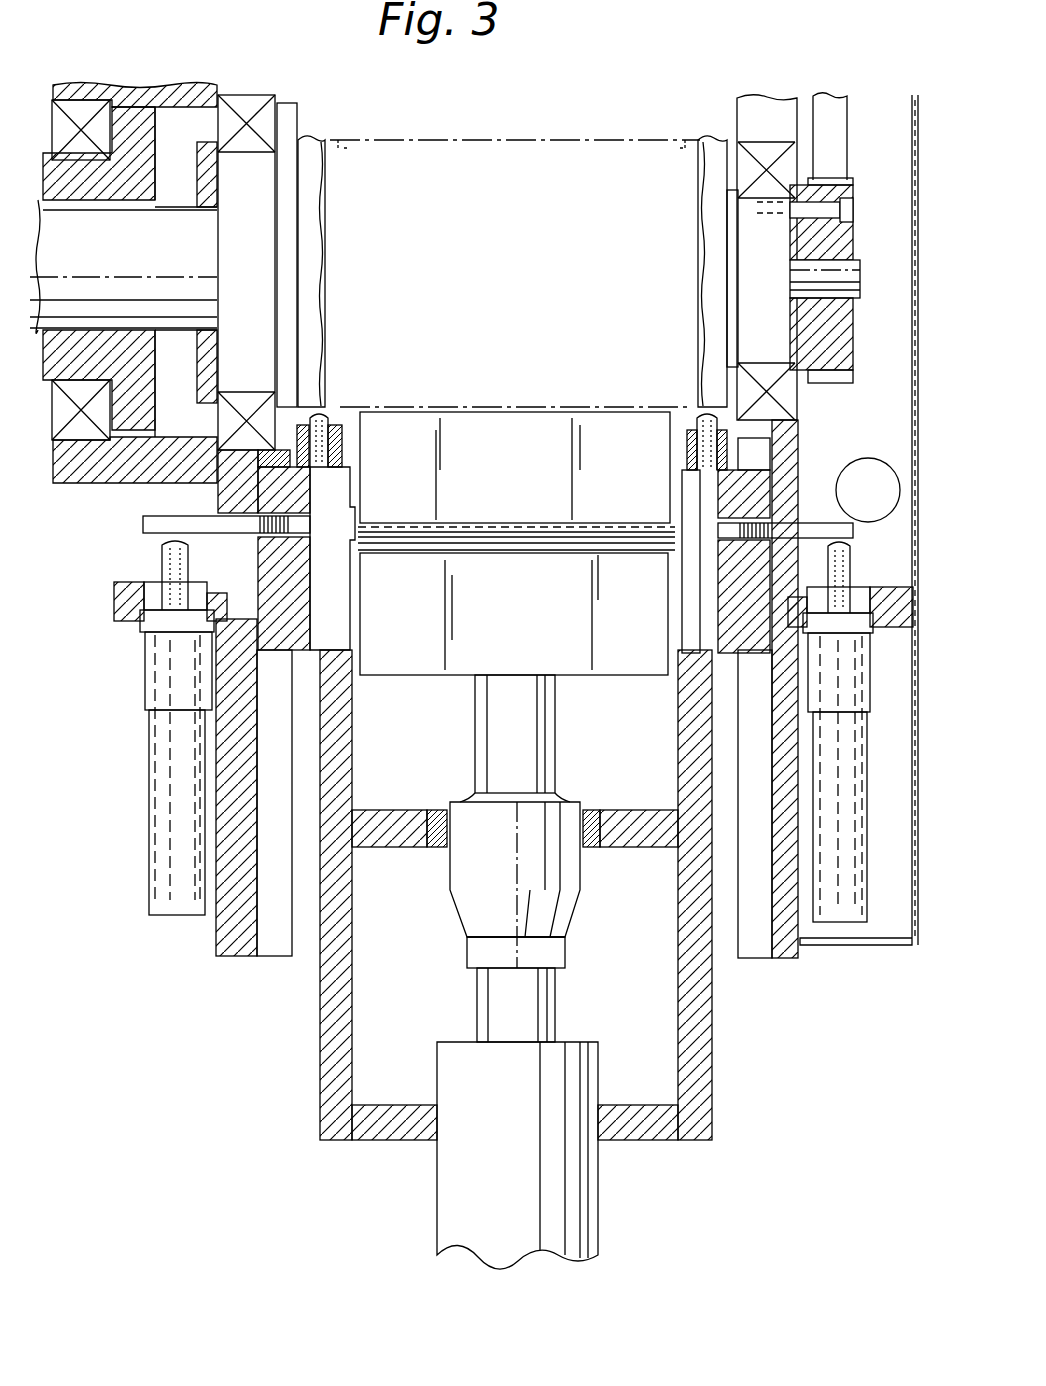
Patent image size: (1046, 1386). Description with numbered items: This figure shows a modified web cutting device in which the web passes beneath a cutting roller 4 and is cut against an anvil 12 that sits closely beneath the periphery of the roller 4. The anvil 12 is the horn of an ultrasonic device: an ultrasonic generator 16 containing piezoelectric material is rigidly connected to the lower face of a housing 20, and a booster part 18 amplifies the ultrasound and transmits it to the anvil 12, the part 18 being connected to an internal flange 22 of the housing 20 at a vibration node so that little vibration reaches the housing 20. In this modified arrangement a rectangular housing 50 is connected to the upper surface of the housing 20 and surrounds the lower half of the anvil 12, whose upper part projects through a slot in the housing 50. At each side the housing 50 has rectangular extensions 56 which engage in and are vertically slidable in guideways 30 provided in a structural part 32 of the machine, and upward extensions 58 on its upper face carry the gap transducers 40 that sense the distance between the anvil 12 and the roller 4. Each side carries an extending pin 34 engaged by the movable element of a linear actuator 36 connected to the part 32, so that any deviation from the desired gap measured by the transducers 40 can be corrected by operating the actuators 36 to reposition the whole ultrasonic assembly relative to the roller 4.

The cutting roller 4 is at (381, 246).
The anvil 12 is at (532, 500).
The ultrasonic generator 16 is at (532, 1164).
The booster part 18 is at (565, 882).
The housing 20 is at (705, 1035).
The internal flange 22 is at (402, 840).
The guideways 30 is at (278, 962).
The structural part 32 is at (235, 485).
The extending pin 34 is at (165, 522).
The linear actuator 36 is at (160, 788).
The gap transducers 40 is at (327, 407).
The rectangular housing 50 is at (340, 628).
The rectangular extensions 56 is at (290, 590).
The upward extensions 58 is at (340, 444).